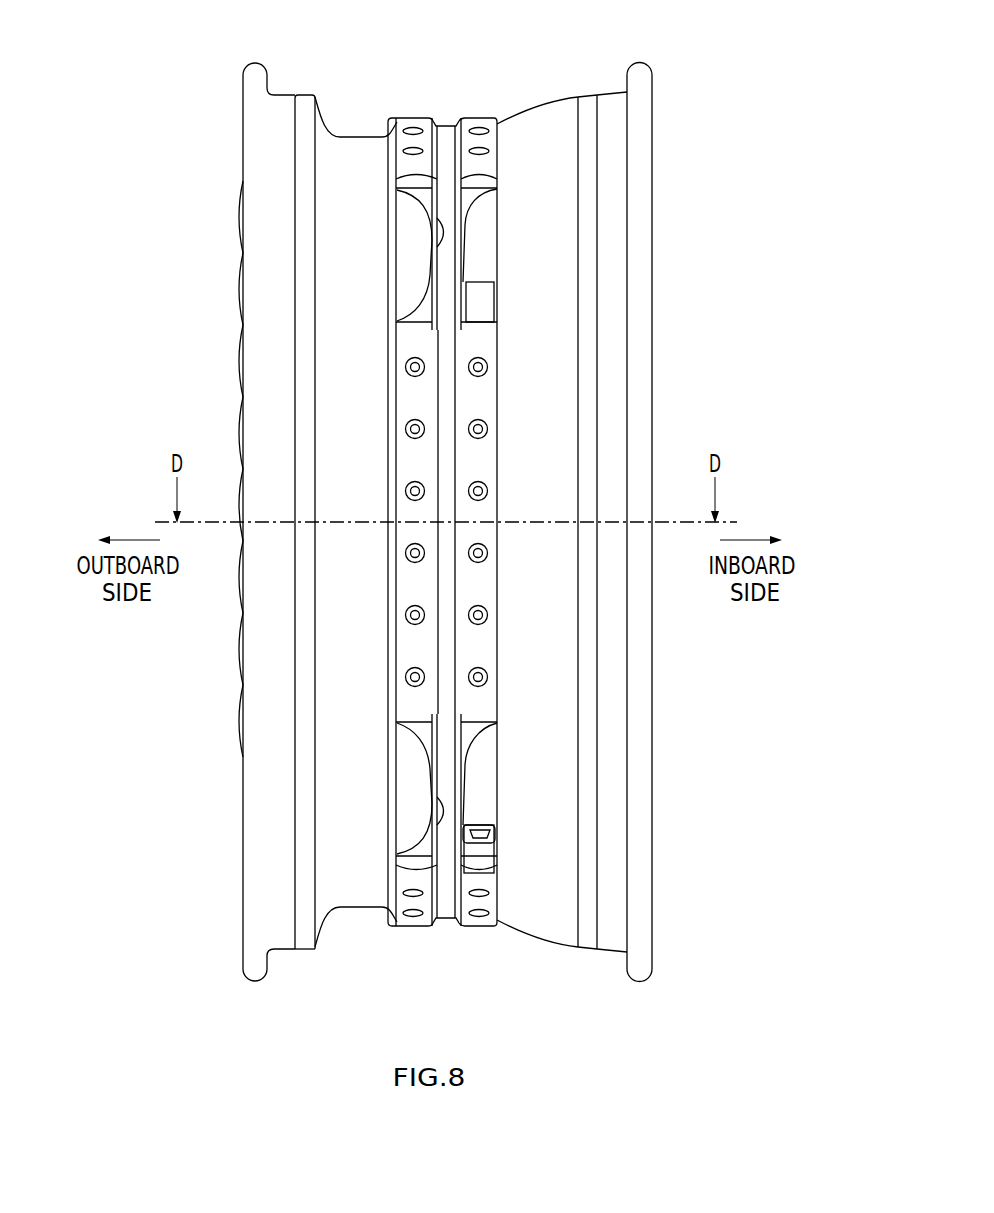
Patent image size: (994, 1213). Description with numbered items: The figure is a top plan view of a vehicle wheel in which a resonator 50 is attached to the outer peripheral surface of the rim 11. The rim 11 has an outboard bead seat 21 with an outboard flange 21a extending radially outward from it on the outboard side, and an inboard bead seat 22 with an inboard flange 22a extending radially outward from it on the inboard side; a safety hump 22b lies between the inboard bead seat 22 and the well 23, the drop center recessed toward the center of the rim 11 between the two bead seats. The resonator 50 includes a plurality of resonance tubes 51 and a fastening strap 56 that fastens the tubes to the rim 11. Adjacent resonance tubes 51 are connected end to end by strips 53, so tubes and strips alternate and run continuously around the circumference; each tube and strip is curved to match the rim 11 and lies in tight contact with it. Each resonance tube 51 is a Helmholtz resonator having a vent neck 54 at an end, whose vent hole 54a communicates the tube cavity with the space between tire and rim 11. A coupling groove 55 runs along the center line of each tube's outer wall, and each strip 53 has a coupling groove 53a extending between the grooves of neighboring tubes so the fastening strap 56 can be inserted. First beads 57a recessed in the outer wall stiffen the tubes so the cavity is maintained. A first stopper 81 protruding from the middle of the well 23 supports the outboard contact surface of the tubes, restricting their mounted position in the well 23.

The rim 11 is at (530, 86).
The outboard bead seat 21 is at (283, 325).
The outboard flange 21a is at (305, 106).
The inboard bead seat 22 is at (612, 105).
The inboard flange 22a is at (645, 101).
The safety hump 22b is at (585, 103).
The well 23 is at (357, 150).
The resonator 50 is at (468, 104).
The resonance tube 51 is at (480, 160).
The strip 53 is at (468, 207).
The coupling groove 53a is at (432, 218).
The vent neck 54 is at (480, 300).
The vent hole 54a is at (478, 835).
The coupling groove 55 is at (449, 666).
The fastening strap 56 is at (448, 778).
The first bead 57a is at (415, 615).
The first stopper 81 is at (390, 128).